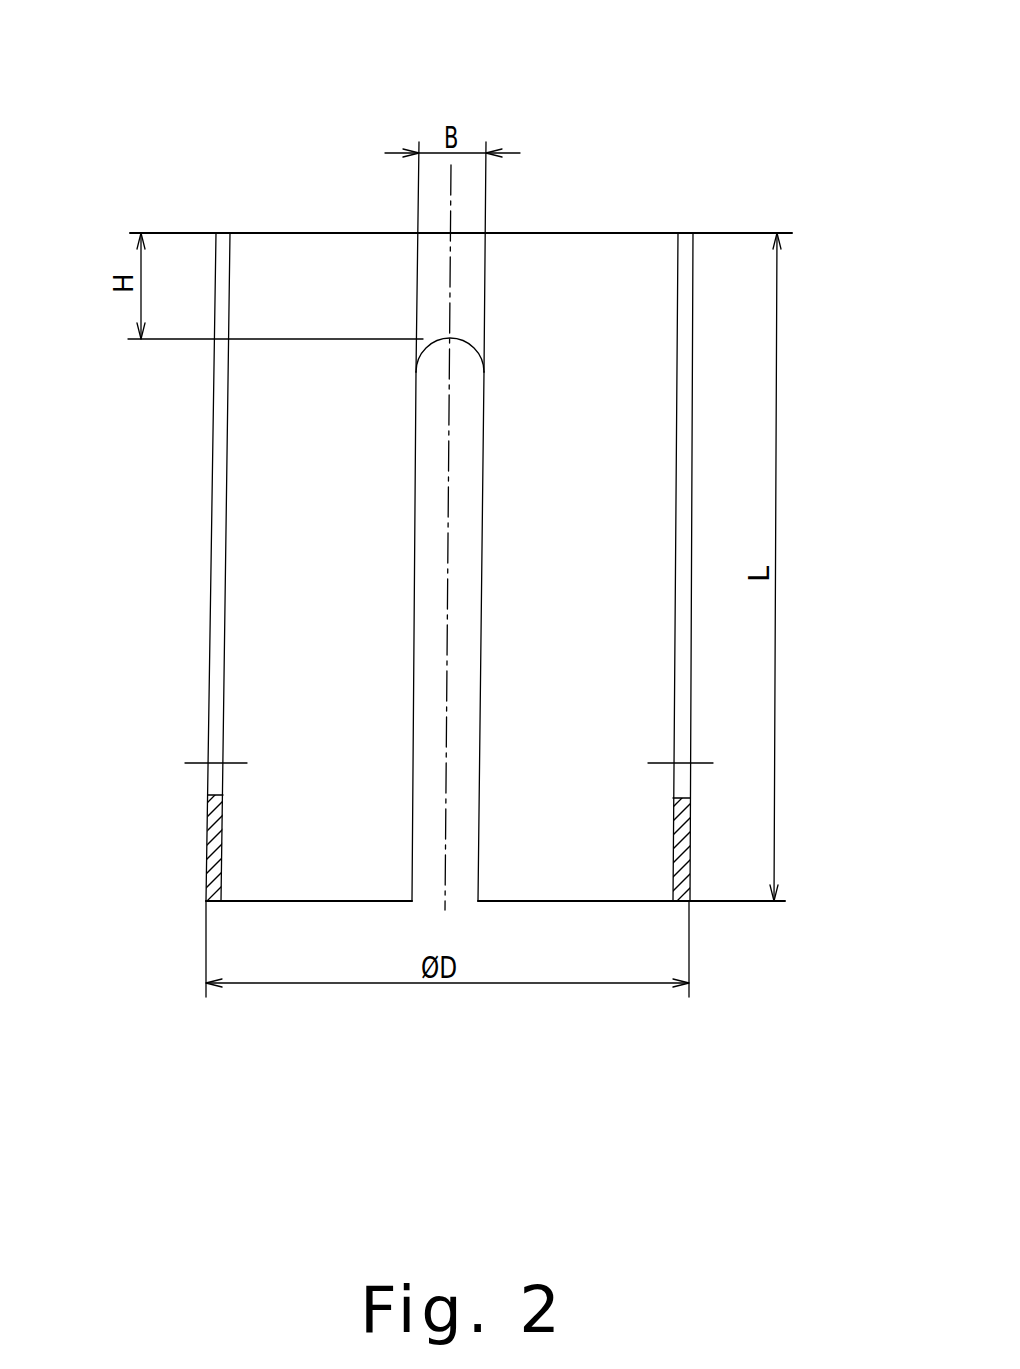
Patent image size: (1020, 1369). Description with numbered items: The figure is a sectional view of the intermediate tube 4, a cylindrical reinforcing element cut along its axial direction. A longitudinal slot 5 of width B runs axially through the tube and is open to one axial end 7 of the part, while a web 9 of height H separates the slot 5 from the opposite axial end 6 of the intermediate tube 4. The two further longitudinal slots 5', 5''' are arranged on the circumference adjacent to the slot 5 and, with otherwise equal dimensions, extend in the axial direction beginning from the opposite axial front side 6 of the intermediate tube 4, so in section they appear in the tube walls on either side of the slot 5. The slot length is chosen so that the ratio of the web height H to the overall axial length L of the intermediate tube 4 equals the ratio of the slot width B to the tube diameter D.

The intermediate tube 4 is at (316, 738).
The longitudinal slot 5 is at (281, 636).
The longitudinal slot 5' is at (768, 456).
The longitudinal slot 5''' is at (142, 570).
The axial end 6 is at (461, 119).
The axial end 7 is at (495, 1002).
The web 9 is at (376, 186).